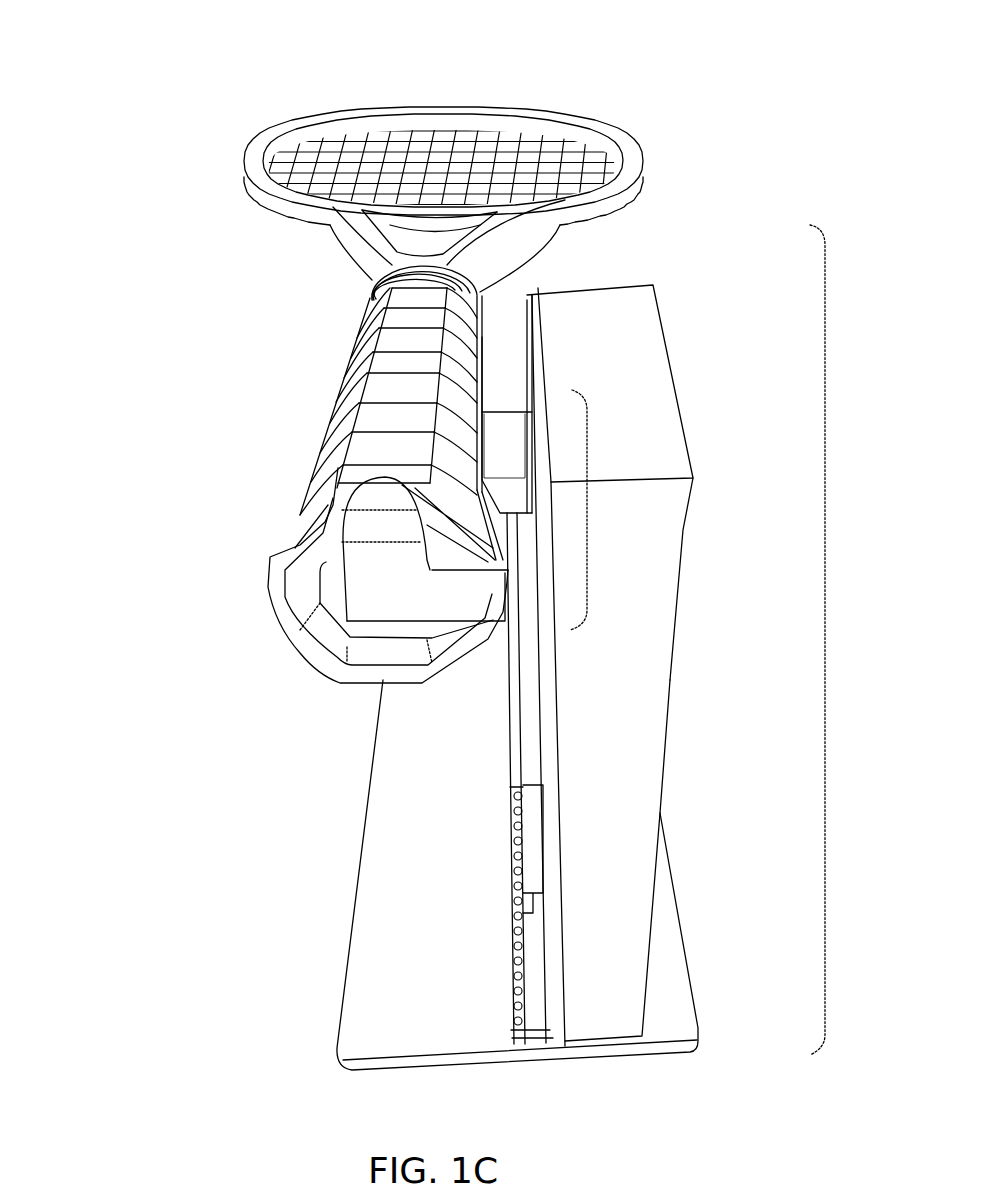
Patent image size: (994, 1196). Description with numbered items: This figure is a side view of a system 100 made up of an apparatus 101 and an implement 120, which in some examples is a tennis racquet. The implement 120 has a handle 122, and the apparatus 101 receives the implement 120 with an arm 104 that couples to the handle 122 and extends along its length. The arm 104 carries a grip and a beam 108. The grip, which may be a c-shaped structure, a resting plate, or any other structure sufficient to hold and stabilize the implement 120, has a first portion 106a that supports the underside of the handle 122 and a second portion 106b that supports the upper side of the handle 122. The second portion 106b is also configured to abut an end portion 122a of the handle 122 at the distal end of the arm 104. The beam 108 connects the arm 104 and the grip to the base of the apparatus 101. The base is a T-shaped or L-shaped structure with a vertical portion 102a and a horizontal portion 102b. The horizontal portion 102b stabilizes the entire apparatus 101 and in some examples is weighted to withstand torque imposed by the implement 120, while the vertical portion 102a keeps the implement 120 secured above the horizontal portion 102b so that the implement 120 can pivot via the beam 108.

The system 100 is at (230, 50).
The apparatus 101 is at (826, 636).
The vertical portion 102a is at (622, 290).
The horizontal portion 102b is at (437, 893).
The arm 104 is at (588, 508).
The first portion 106a is at (483, 345).
The second portion 106b is at (372, 495).
The beam 108 is at (503, 422).
The implement 120 is at (447, 162).
The handle 122 is at (416, 318).
The end portion 122a is at (268, 552).